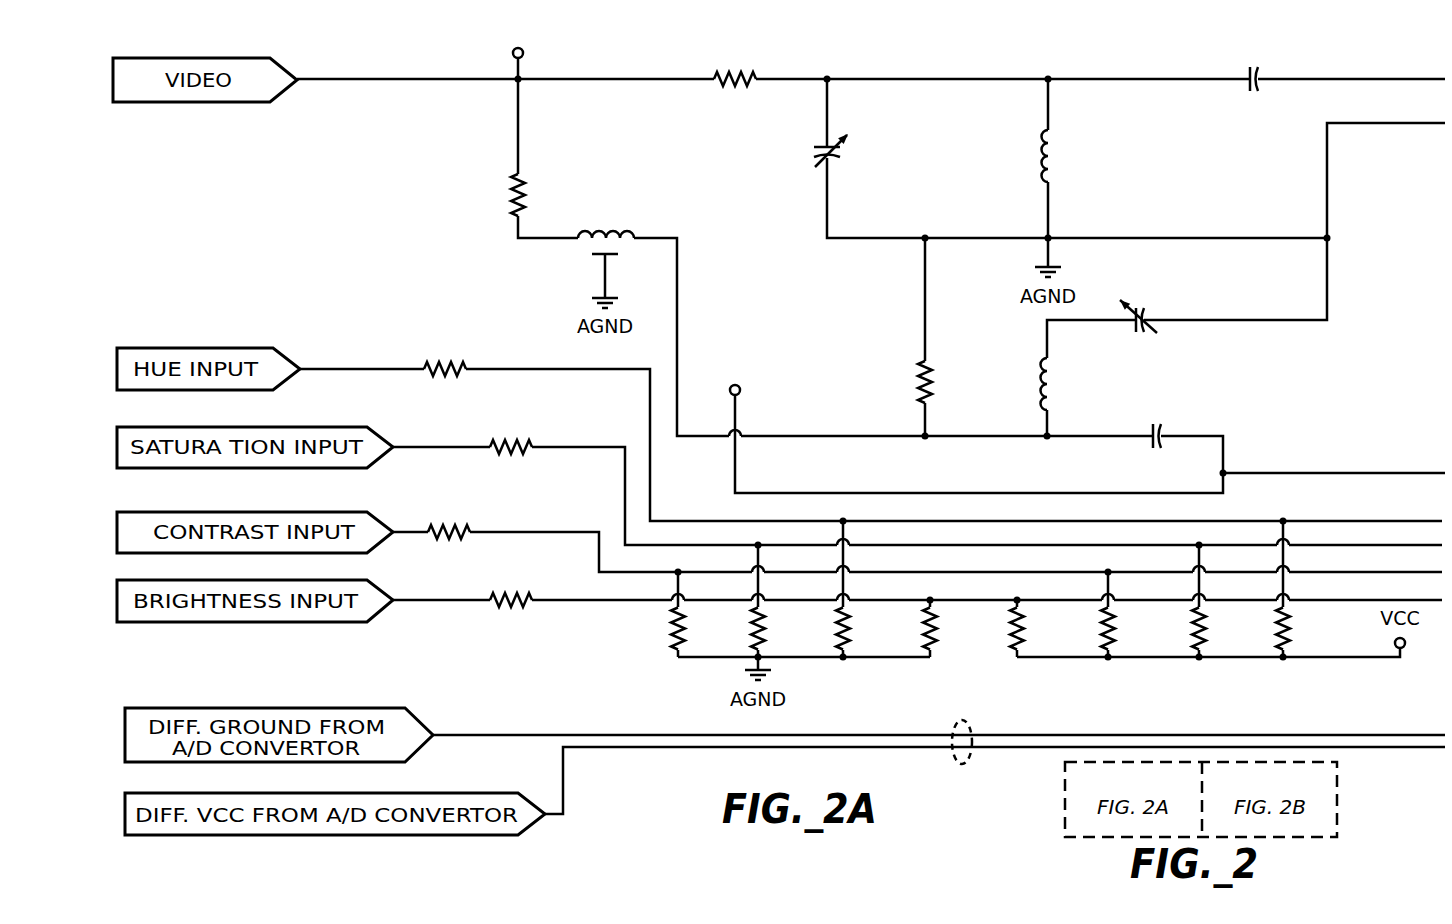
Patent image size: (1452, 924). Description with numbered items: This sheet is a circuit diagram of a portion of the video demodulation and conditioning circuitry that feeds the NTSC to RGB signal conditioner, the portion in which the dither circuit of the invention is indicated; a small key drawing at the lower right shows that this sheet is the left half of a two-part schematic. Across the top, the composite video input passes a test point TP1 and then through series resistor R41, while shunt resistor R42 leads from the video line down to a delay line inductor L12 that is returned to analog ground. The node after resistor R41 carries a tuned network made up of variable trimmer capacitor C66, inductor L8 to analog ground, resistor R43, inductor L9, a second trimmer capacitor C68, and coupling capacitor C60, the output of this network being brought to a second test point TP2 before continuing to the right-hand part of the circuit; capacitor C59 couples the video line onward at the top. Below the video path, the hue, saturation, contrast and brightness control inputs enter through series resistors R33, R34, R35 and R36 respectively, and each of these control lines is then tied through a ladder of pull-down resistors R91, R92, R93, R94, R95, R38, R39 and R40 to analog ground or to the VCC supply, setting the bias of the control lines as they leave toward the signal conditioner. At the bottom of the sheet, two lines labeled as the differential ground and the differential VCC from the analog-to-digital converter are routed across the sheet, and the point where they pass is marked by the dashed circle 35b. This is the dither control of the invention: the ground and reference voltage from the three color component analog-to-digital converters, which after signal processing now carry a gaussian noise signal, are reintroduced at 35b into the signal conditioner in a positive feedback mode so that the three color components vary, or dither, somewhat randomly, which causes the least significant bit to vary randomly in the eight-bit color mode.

The dither control 35b is at (953, 719).
The test point 1 TP1 is at (537, 52).
The test point 2 TP2 is at (754, 390).
The resistor 1K R41 is at (735, 76).
The resistor 1K R42 is at (490, 195).
The resistor 1K R43 is at (950, 383).
The hue input resistor 12K R33 is at (445, 370).
The saturation input resistor 12K R34 is at (511, 448).
The contrast input resistor 43K R35 is at (449, 533).
The brightness input resistor 12K R36 is at (511, 602).
The resistor 22K R91 is at (702, 626).
The resistor 33K R92 is at (782, 626).
The resistor 33K R93 is at (867, 626).
The resistor 8.2K R94 is at (957, 626).
The resistor 30K R95 is at (1041, 626).
The resistor 22K R38 is at (1132, 626).
The resistor 22K R39 is at (1223, 626).
The resistor 22K R40 is at (1306, 626).
The capacitor .01uF C59 is at (1266, 77).
The capacitor .01uF C60 is at (1154, 437).
The variable capacitor 6-50pF C66 is at (864, 159).
The variable capacitor 6-50pF C68 is at (1145, 320).
The inductor 33uH L8 is at (1076, 157).
The inductor 33uH L9 is at (1076, 384).
The delay line inductor L12 is at (605, 205).